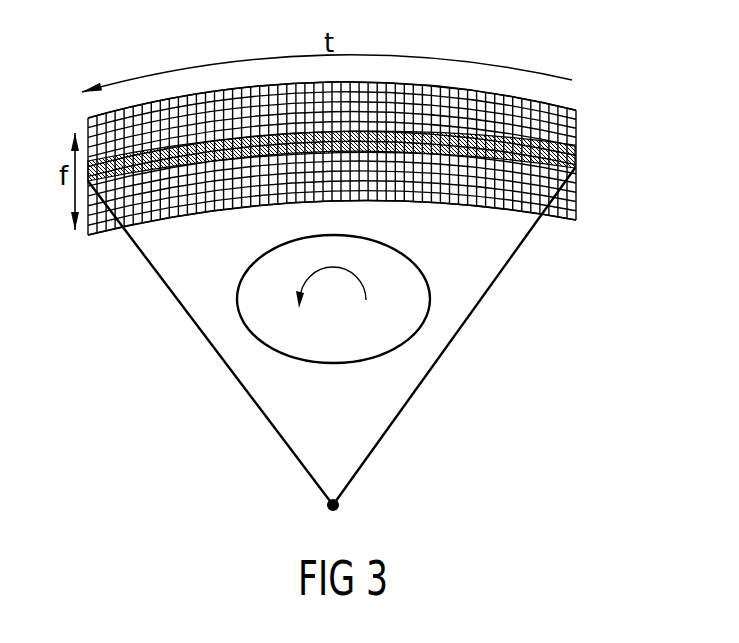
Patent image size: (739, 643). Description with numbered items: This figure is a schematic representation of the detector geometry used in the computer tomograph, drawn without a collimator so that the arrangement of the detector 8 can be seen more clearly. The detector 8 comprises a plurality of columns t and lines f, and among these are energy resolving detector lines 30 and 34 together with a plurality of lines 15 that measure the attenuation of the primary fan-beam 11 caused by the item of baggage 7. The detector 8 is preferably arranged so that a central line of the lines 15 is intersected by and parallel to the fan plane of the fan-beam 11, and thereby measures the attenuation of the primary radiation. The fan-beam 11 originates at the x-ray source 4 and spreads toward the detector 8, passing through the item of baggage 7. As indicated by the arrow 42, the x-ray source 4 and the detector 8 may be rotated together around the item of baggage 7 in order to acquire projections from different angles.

The x-ray source 4 is at (340, 506).
The item of baggage 7 is at (419, 268).
The detector 8 is at (88, 118).
The primary fan-beam 11 is at (463, 327).
The lines for measuring attenuation 15 is at (576, 168).
The energy resolving detector line 30 is at (576, 110).
The energy resolving detector line 34 is at (576, 222).
The arrow 42 is at (327, 335).